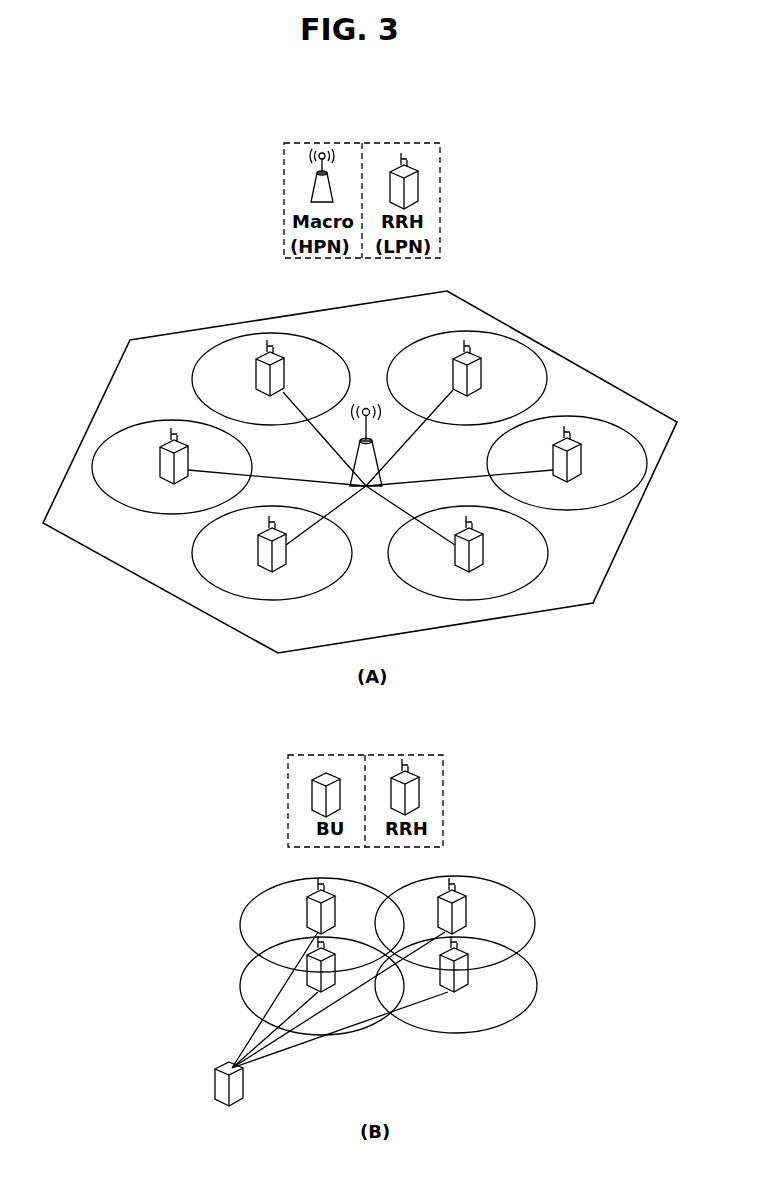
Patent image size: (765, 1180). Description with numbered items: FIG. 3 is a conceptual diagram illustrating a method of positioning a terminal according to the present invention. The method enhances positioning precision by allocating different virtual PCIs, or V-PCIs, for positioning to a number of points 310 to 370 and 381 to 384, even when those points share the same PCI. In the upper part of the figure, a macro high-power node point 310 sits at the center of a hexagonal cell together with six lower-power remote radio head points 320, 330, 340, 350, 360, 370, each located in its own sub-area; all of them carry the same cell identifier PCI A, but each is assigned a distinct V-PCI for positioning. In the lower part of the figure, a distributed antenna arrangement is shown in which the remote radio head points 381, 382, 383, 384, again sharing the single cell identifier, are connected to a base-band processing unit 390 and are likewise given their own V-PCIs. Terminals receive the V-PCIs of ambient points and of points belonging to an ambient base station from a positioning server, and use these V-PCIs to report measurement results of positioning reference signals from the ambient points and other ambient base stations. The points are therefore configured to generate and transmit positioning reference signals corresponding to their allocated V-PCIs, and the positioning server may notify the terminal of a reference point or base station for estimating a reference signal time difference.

The point 310 is at (366, 405).
The point 320 is at (486, 362).
The point 330 is at (583, 447).
The point 340 is at (482, 558).
The point 350 is at (262, 548).
The point 360 is at (160, 455).
The point 370 is at (262, 357).
The point 381 is at (312, 897).
The point 382 is at (462, 900).
The point 383 is at (468, 978).
The point 384 is at (337, 978).
The baseband unit (BU) 390 is at (245, 1080).